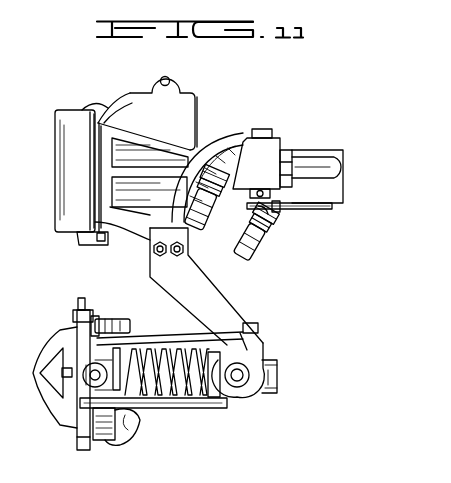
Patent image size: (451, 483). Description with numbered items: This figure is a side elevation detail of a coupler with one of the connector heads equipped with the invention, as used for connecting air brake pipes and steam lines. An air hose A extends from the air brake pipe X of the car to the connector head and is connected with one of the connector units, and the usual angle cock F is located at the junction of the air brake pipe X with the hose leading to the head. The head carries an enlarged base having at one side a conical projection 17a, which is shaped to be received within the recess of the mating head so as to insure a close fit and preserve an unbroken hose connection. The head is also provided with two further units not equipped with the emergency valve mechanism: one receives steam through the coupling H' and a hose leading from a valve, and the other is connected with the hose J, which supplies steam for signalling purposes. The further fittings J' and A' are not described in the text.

The angle cock F is at (268, 160).
The air brake pipe X is at (310, 167).
The flexible hose A is at (205, 212).
The hose J is at (262, 236).
The hose coupling (left) J' is at (115, 310).
The coupling ring A' is at (120, 353).
The conical projection 17a is at (47, 350).
The coupling H' is at (123, 441).